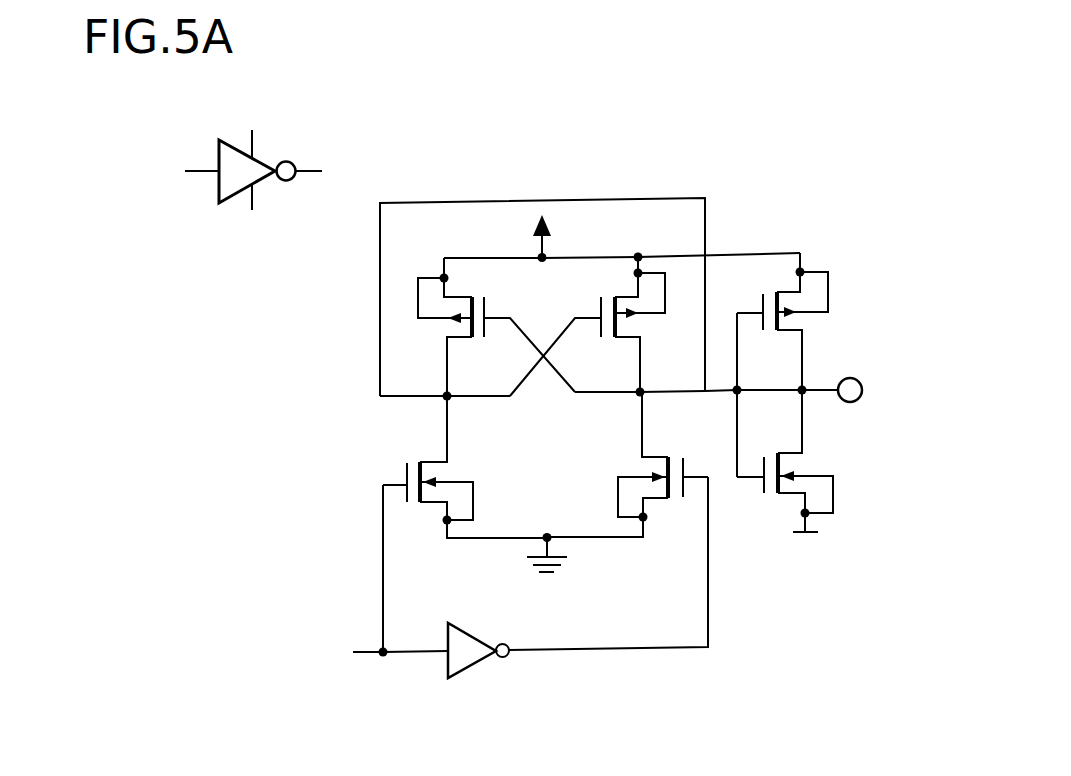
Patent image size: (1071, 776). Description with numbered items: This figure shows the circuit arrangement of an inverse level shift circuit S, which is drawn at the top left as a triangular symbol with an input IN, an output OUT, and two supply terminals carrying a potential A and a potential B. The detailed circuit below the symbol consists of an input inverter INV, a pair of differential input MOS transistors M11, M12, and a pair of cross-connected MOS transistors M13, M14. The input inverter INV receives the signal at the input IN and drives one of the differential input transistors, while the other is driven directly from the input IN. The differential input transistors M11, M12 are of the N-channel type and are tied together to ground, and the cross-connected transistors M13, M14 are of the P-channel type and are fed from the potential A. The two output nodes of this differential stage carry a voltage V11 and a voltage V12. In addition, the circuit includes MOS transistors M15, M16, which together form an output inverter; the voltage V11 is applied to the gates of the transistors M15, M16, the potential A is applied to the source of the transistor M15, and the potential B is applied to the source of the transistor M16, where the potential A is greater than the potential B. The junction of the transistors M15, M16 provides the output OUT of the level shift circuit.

The inverse level shift circuit S is at (257, 171).
The input terminal IN is at (299, 407).
The output terminal OUT is at (616, 280).
The potential A is at (520, 181).
The potential B is at (530, 380).
The voltage V11 is at (446, 397).
The voltage V12 is at (691, 395).
The differential input MOS transistor M11 is at (465, 467).
The differential input MOS transistor M12 is at (627, 464).
The cross-connected MOS transistor M13 is at (465, 327).
The cross-connected MOS transistor M14 is at (621, 323).
The MOS transistor M15 is at (813, 321).
The MOS transistor M16 is at (816, 461).
The input inverter INV is at (578, 587).